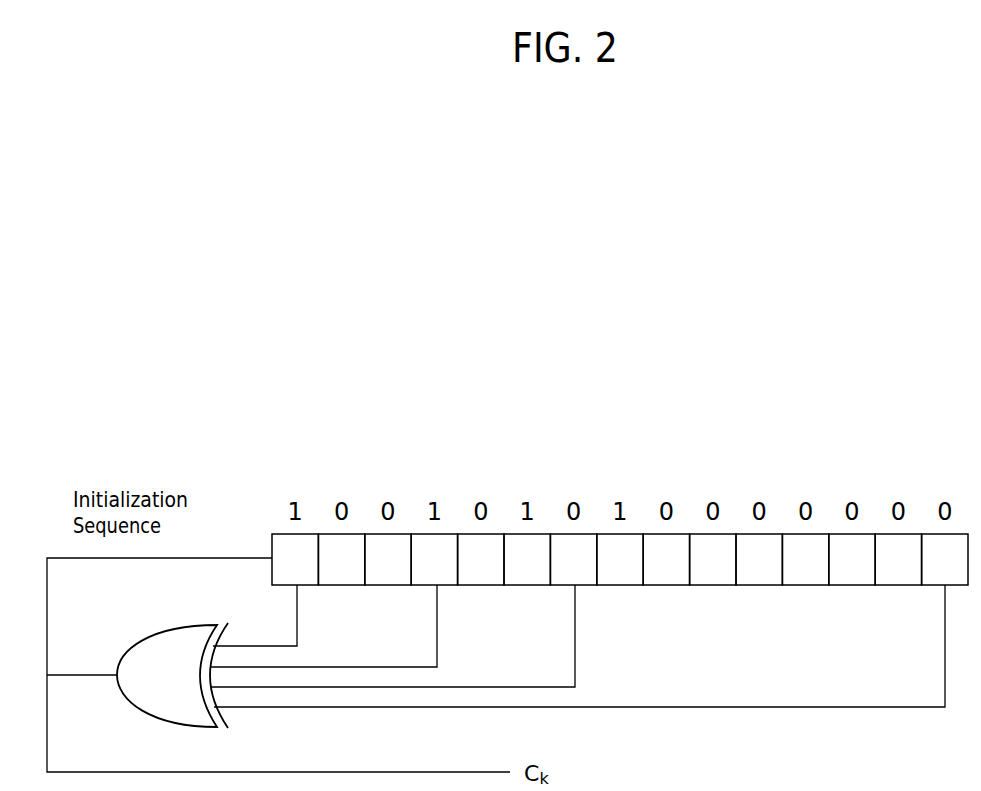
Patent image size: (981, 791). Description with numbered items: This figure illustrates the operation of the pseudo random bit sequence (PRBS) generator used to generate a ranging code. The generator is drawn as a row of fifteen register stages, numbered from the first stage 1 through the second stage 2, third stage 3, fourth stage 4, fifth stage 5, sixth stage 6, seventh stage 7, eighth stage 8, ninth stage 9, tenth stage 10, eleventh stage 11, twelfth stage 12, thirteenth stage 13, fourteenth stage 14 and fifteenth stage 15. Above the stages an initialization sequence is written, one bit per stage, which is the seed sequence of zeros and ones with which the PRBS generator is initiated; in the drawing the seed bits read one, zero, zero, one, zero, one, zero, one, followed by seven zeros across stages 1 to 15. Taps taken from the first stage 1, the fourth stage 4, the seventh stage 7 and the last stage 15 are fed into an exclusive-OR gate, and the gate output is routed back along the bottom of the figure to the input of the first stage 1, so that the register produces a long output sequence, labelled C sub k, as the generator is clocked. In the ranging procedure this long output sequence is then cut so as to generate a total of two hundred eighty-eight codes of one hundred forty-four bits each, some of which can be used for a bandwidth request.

The shift register stage 1 is at (295, 559).
The shift register stage 2 is at (341, 559).
The shift register stage 3 is at (388, 559).
The shift register stage 4 is at (434, 559).
The shift register stage 5 is at (481, 559).
The shift register stage 6 is at (527, 559).
The shift register stage 7 is at (573, 559).
The shift register stage 8 is at (620, 559).
The shift register stage 9 is at (666, 559).
The shift register stage 10 is at (713, 559).
The shift register stage 11 is at (759, 559).
The shift register stage 12 is at (805, 559).
The shift register stage 13 is at (852, 559).
The shift register stage 14 is at (898, 559).
The shift register stage 15 is at (945, 559).